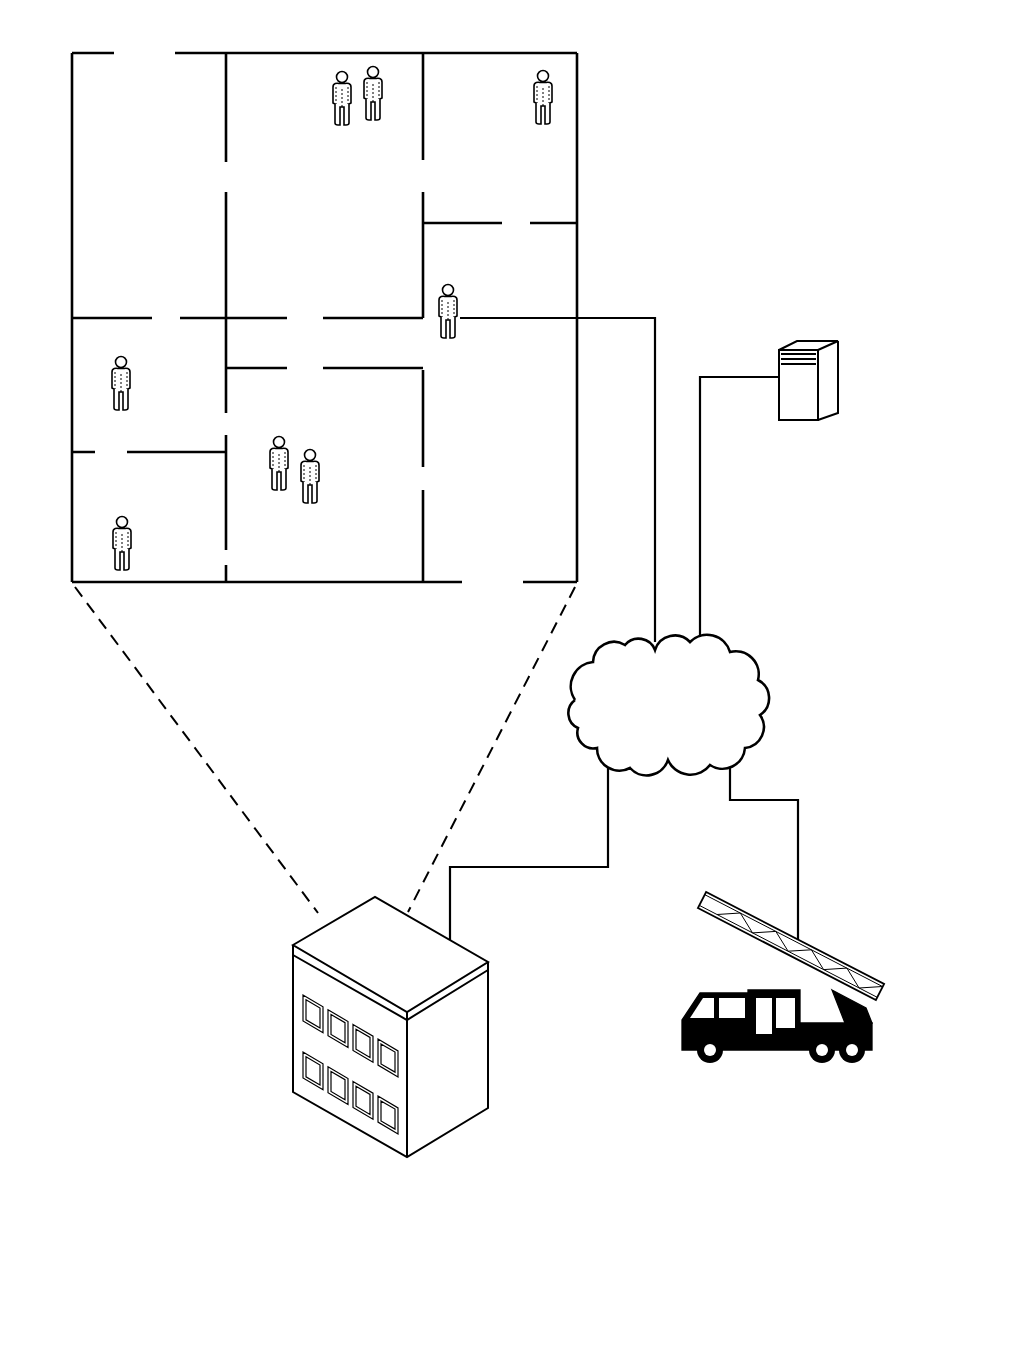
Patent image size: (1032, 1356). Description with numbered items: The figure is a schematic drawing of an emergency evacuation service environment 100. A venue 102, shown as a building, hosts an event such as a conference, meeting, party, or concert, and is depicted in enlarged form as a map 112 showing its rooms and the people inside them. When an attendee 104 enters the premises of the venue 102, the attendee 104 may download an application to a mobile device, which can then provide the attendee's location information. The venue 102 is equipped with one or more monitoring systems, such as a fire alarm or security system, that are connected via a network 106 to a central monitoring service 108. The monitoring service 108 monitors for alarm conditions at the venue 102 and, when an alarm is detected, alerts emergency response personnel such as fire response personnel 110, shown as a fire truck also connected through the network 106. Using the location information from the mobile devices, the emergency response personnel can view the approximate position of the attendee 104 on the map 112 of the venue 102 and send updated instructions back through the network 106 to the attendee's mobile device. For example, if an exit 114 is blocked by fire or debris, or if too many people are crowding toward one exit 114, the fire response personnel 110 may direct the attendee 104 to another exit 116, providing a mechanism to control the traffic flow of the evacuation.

The emergency evacuation service environment 100 is at (665, 110).
The venue 102 is at (470, 963).
The attendee 104 is at (458, 300).
The network 106 is at (732, 652).
The monitoring service 108 is at (814, 340).
The fire response personnel 110 is at (823, 955).
The map 112 is at (366, 52).
The exit 114 is at (142, 46).
The another exit 116 is at (492, 592).